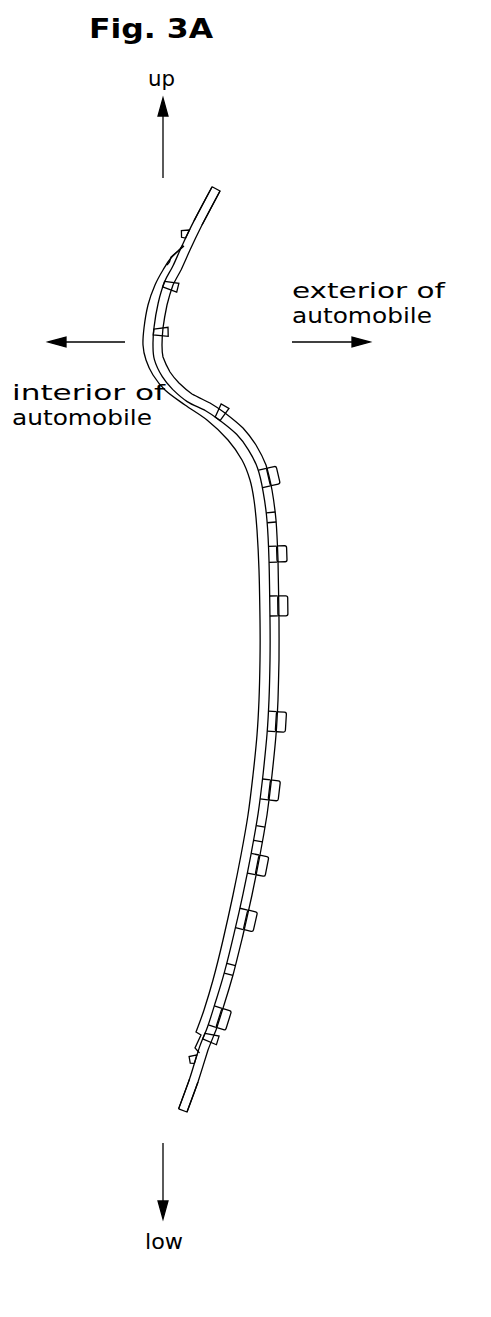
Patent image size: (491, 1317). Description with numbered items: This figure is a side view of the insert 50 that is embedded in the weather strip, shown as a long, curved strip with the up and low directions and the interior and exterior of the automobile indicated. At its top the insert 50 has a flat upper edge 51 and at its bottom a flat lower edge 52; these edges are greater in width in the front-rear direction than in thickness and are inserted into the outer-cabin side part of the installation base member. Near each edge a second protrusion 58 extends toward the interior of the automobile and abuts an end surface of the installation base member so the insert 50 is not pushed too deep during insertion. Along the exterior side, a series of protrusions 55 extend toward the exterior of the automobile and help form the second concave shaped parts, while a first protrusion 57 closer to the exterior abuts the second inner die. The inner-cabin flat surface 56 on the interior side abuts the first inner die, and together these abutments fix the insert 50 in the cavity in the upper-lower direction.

The insert 50 is at (263, 422).
The upper edge 51 is at (212, 223).
The lower edge 52 is at (193, 1094).
The protrusions 55 is at (288, 607).
The inner-cabin flat surface 56 is at (259, 681).
The first protrusion 57 is at (180, 286).
The second protrusions 58 is at (181, 236).